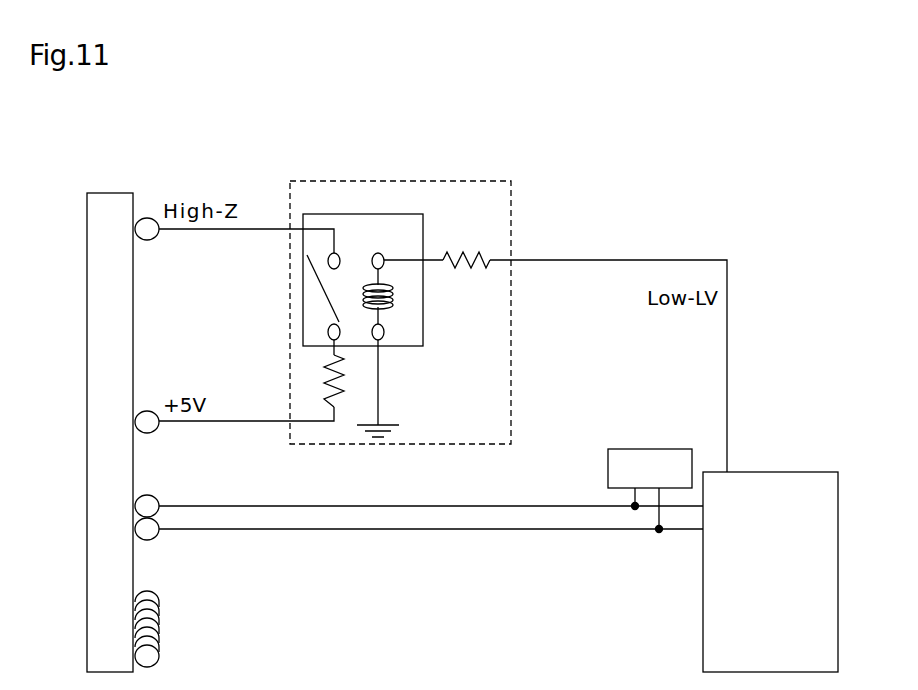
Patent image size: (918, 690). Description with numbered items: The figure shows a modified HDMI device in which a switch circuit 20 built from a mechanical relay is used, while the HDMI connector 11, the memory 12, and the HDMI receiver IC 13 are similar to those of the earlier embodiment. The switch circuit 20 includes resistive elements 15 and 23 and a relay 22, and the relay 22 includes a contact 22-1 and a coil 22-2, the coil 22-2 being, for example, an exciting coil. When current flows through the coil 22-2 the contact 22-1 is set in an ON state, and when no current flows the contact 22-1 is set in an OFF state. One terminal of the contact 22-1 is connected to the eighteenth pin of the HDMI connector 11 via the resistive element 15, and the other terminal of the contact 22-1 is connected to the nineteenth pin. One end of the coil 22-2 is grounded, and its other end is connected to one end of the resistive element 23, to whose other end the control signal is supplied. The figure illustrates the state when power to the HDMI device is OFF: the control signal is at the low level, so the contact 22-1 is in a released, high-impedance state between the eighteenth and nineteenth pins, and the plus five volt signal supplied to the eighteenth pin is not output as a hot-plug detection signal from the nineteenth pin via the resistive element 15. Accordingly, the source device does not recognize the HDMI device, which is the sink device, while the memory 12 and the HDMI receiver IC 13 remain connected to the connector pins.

The HDMI connector 11 is at (133, 193).
The memory 12 is at (650, 448).
The HDMI receiver IC 13 is at (763, 472).
The resistive element 15 is at (322, 390).
The switch circuit 20 is at (362, 181).
The relay 22 is at (353, 245).
The contact 22-1 is at (312, 296).
The coil 22-2 is at (395, 297).
The resistive element 23 is at (456, 246).